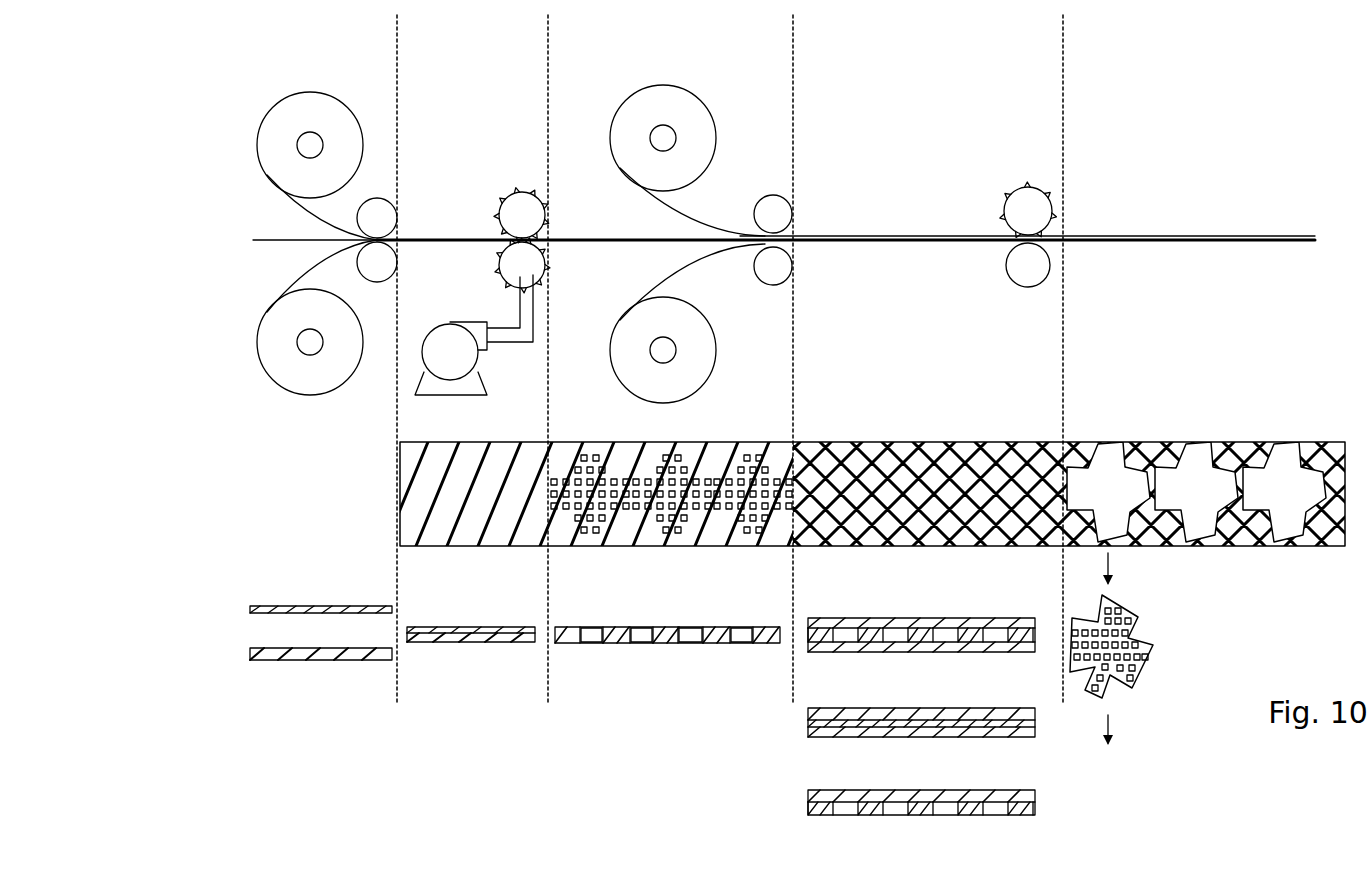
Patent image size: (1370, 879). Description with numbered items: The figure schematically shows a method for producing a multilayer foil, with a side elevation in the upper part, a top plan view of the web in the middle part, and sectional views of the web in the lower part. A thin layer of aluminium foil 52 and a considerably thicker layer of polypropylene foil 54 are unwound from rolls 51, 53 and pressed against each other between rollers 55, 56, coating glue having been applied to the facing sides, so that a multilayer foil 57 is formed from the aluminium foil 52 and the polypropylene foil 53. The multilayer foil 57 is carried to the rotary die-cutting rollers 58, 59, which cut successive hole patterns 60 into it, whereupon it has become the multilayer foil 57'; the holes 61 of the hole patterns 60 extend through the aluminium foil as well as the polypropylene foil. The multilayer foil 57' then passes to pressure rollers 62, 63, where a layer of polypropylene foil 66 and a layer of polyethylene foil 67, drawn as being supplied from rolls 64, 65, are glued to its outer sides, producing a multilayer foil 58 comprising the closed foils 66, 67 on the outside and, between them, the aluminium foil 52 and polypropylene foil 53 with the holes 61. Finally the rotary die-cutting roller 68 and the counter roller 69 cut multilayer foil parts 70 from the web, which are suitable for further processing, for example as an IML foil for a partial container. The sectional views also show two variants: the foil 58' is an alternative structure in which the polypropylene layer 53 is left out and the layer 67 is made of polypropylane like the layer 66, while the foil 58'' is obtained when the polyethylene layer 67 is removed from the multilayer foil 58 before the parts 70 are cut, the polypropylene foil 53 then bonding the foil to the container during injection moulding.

The roll 51 is at (320, 112).
The layer of aluminium foil 52 is at (307, 214).
The roll / layer of polypropylene foil 53 is at (312, 385).
The layer of polypropylene foil 54 is at (298, 267).
The roller 55 is at (383, 212).
The roller 56 is at (383, 258).
The multilayer foil 57 is at (592, 472).
The multilayer foil 57' is at (667, 479).
The rotary die-cutting roller / multilayer foil 58 is at (931, 396).
The multilayer foil 58' is at (870, 734).
The foil 58'' is at (866, 813).
The rotary die-cutting roller 59 is at (548, 260).
The hole patterns 60 is at (573, 465).
The holes 61 is at (592, 643).
The pressure roller 62 is at (770, 200).
The pressure roller 63 is at (770, 275).
The roll 64 is at (690, 100).
The roll 65 is at (700, 362).
The layer of polypropylene foil 66 is at (680, 215).
The layer of polyethylene foil 67 is at (675, 268).
The rotary die-cutting roller 68 is at (1025, 205).
The counter roller 69 is at (1020, 275).
The multilayer foil parts 70 is at (1135, 615).